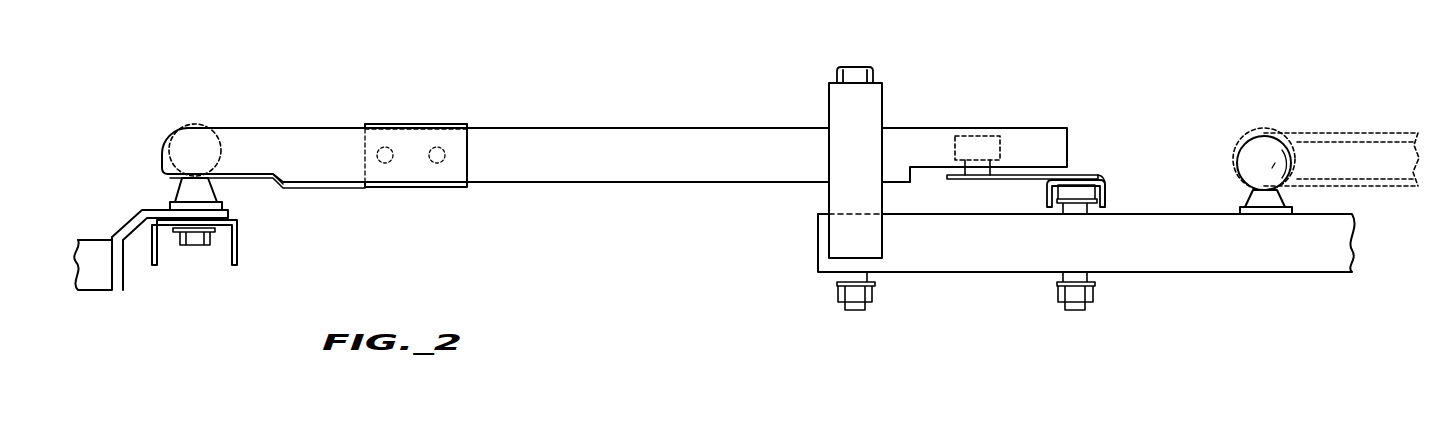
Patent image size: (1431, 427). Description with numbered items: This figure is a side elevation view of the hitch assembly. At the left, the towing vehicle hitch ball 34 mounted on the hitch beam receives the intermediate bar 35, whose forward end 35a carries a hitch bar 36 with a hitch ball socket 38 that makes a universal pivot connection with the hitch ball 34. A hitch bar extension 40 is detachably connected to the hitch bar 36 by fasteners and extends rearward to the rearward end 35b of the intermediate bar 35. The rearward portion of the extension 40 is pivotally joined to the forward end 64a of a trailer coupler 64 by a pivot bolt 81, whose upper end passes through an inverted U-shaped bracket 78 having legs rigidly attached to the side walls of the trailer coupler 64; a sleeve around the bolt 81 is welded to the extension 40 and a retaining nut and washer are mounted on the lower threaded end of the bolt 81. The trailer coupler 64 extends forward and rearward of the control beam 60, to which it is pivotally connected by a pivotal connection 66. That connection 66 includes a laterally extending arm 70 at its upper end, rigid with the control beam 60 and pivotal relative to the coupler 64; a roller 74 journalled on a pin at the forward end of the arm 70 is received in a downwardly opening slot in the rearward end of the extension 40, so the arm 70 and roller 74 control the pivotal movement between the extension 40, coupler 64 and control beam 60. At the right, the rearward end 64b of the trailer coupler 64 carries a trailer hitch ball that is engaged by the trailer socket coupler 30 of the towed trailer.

The trailer socket coupler 30 is at (1338, 142).
The towing vehicle hitch ball 34 is at (190, 125).
The intermediate bar 35 is at (587, 232).
The forward end of intermediate bar 35a is at (270, 97).
The rearward end of intermediate bar 35b is at (1067, 123).
The hitch bar 36 is at (360, 125).
The hitch ball socket 38 is at (247, 180).
The hitch bar extension 40 is at (567, 129).
The control beam 60 is at (1107, 190).
The trailer coupler 64 is at (1260, 273).
The forward end of trailer coupler 64a is at (923, 280).
The rearward end of trailer coupler 64b is at (1353, 270).
The pivotal connection 66 is at (1094, 177).
The laterally extending arm 70 is at (1015, 182).
The roller 74 is at (1002, 148).
The inverted U-shaped bracket 78 is at (882, 103).
The pivot bolt 81 is at (850, 66).